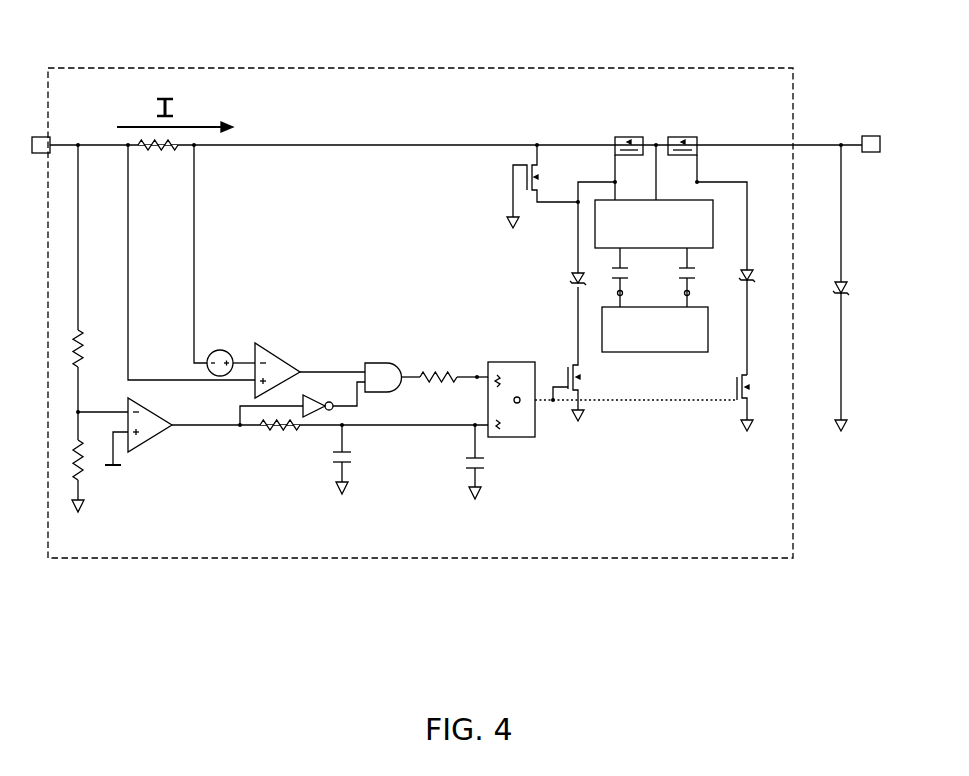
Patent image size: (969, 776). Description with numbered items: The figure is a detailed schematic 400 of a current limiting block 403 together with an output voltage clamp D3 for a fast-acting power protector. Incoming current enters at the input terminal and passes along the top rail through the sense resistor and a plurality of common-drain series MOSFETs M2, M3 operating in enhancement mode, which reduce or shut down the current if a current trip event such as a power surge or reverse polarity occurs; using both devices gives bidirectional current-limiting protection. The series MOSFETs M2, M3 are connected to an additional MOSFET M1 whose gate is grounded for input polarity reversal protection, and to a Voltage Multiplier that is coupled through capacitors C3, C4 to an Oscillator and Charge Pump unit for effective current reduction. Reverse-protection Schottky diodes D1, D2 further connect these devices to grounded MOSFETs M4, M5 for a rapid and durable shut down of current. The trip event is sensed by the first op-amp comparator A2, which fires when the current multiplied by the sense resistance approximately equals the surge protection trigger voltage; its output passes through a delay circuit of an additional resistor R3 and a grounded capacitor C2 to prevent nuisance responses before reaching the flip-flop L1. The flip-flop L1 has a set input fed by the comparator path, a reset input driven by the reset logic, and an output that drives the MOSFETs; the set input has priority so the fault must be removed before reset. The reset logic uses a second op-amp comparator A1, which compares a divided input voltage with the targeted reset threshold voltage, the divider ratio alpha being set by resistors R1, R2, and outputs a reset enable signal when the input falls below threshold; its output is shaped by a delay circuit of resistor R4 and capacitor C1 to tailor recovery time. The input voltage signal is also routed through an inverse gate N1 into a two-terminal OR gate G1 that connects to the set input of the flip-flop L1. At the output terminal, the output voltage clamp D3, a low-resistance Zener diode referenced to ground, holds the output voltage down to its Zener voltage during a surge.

The current limiting block 403 is at (420, 295).
The detailed schematic 400 is at (488, 683).
The resistor R1 is at (67, 278).
The resistor R2 is at (68, 462).
The additional resistor R3 is at (454, 366).
The additional resistor R4 is at (280, 437).
The second op-amp comparator A1 is at (128, 441).
The first op-amp comparator A2 is at (310, 370).
The inverse gate N1 is at (302, 402).
The two-terminal OR gate G1 is at (392, 365).
The capacitor C1 is at (327, 459).
The capacitor C2 is at (485, 462).
The capacitor C3 is at (631, 277).
The capacitor C4 is at (697, 277).
The flip-flop L1 is at (511, 384).
The additional MOSFET M1 is at (561, 186).
The common-drain series MOSFET M2 is at (629, 156).
The common-drain series MOSFET M3 is at (707, 191).
The grounded MOSFET M4 is at (586, 354).
The grounded MOSFET M5 is at (760, 403).
The reverse-protection Schottky diode D1 is at (565, 247).
The reverse-protection Schottky diode D2 is at (760, 322).
The output voltage clamp D3 is at (873, 288).